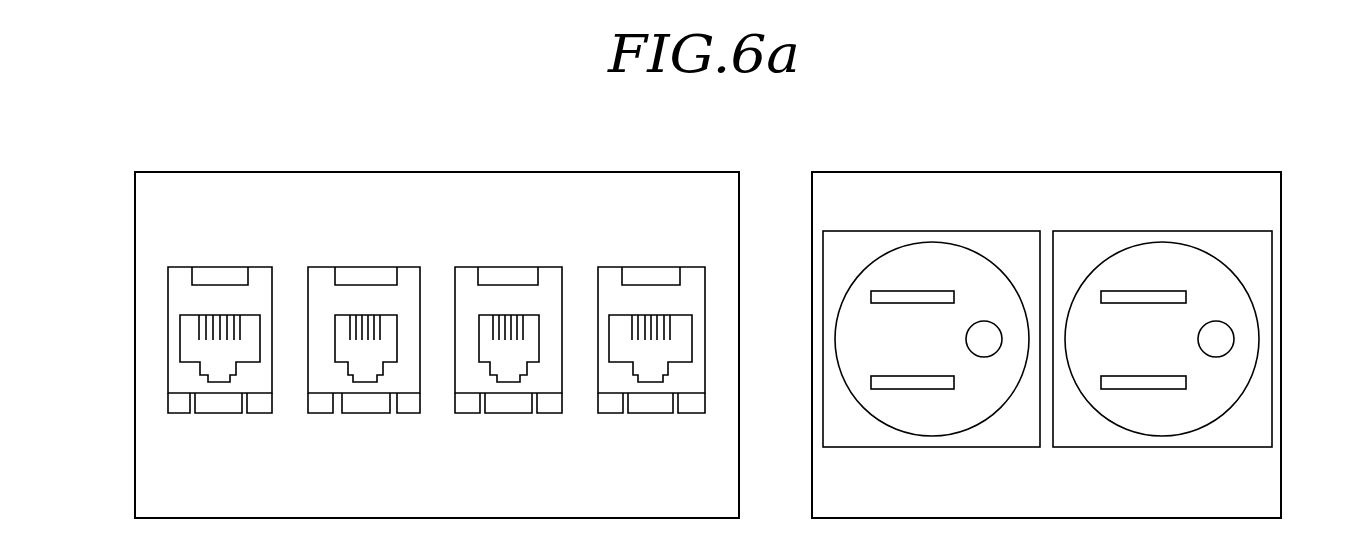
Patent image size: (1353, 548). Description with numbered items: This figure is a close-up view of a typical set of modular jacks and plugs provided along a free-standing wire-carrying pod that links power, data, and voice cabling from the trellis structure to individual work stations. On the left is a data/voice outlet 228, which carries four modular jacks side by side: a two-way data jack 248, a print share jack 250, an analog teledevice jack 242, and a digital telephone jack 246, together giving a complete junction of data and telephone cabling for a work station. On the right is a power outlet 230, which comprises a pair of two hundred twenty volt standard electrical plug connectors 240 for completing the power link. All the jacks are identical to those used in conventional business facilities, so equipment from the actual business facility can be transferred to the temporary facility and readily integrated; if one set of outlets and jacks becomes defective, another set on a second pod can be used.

The data/voice outlet 228 is at (192, 170).
The two-way data jack 248 is at (260, 265).
The print share jack 250 is at (385, 265).
The analog teledevice jack 242 is at (503, 265).
The digital telephone jack 246 is at (622, 265).
The power outlet 230 is at (872, 170).
The electrical plug connector 240 is at (985, 258).